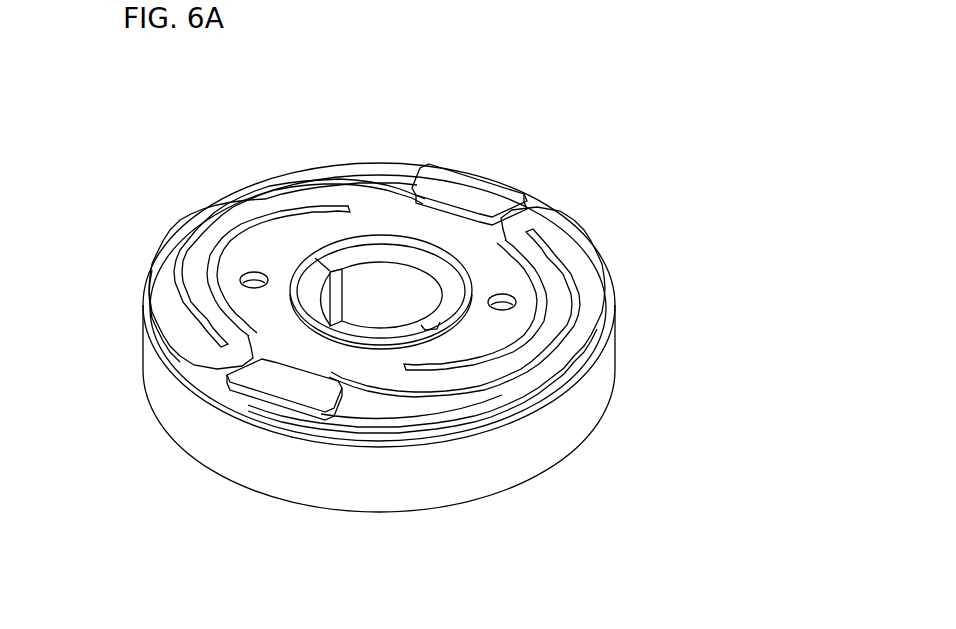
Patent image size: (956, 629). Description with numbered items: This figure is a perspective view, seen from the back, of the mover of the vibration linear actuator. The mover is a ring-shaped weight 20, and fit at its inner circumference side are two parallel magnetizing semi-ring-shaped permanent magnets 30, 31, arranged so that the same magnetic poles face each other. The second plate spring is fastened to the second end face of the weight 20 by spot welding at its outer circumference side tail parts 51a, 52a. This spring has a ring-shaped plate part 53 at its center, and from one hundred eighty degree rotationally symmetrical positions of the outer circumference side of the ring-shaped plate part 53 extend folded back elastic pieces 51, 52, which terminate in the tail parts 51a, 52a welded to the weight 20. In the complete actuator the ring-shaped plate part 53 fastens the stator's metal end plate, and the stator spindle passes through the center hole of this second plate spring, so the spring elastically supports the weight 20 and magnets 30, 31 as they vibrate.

The ring-shaped weight 20 is at (530, 456).
The semi-ring-shaped permanent magnet 30 is at (306, 299).
The semi-ring-shaped permanent magnet 31 is at (430, 262).
The folded back elastic piece 51 is at (553, 363).
The outer circumference side tail part 51a is at (265, 384).
The folded back elastic piece 52 is at (260, 181).
The outer circumference side tail part 52a is at (498, 192).
The ring-shaped plate part 53 is at (408, 224).